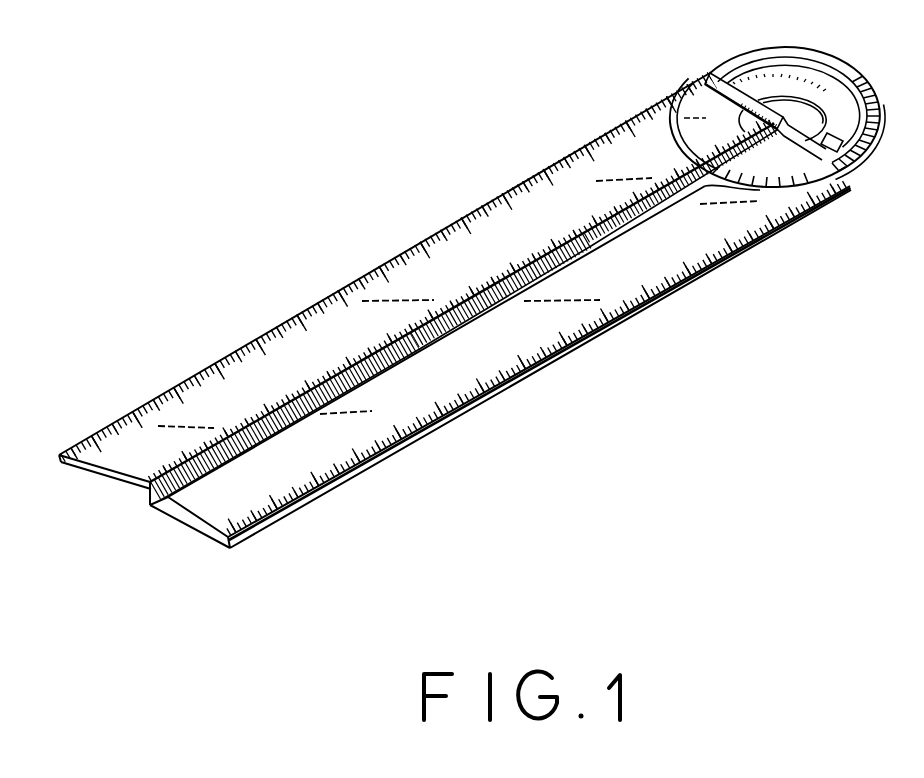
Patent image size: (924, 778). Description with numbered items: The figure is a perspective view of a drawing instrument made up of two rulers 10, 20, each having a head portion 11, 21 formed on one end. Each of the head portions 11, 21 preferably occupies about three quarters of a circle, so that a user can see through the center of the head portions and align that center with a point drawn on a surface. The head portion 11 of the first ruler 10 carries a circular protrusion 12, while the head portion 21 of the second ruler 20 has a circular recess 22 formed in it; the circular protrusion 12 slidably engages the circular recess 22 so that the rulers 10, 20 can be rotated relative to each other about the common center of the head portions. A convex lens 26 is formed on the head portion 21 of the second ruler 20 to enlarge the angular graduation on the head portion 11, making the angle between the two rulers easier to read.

The ruler 10 is at (122, 467).
The ruler 20 is at (215, 513).
The head portion 11 is at (703, 100).
The circular protrusion 12 is at (692, 140).
The head portion 21 is at (855, 68).
The circular recess 22 is at (740, 98).
The convex lens 26 is at (834, 156).